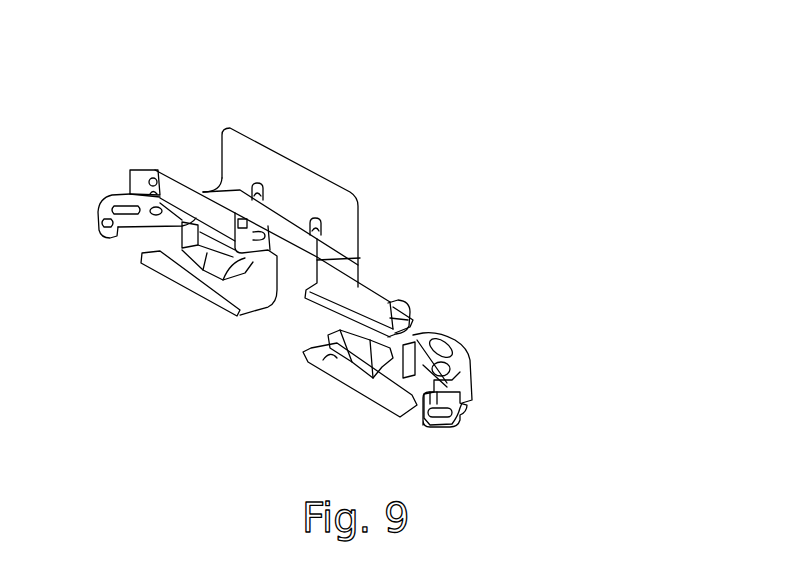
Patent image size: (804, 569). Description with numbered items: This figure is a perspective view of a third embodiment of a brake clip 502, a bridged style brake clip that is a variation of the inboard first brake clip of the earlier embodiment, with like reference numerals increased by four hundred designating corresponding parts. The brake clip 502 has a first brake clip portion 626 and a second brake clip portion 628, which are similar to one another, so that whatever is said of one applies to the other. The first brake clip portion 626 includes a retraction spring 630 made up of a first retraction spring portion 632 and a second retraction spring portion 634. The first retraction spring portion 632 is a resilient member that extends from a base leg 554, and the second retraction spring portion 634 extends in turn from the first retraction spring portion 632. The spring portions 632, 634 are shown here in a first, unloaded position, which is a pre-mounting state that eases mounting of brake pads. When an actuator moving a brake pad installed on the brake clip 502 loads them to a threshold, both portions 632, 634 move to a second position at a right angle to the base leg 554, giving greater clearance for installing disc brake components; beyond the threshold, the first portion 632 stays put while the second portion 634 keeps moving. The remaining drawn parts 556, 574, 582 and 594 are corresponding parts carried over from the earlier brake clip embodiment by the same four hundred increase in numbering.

The brake clip 502 is at (268, 91).
The second brake clip portion 628 is at (177, 146).
The tab 574 is at (393, 305).
The rail channel 556 is at (397, 317).
The first brake clip portion 626 is at (453, 297).
The first retraction spring portion 632 is at (458, 342).
The retraction spring 630 is at (481, 358).
The second retraction spring portion 634 is at (439, 442).
The first slab 582 is at (305, 298).
The base leg 554 is at (332, 320).
The second slab 594 is at (313, 348).